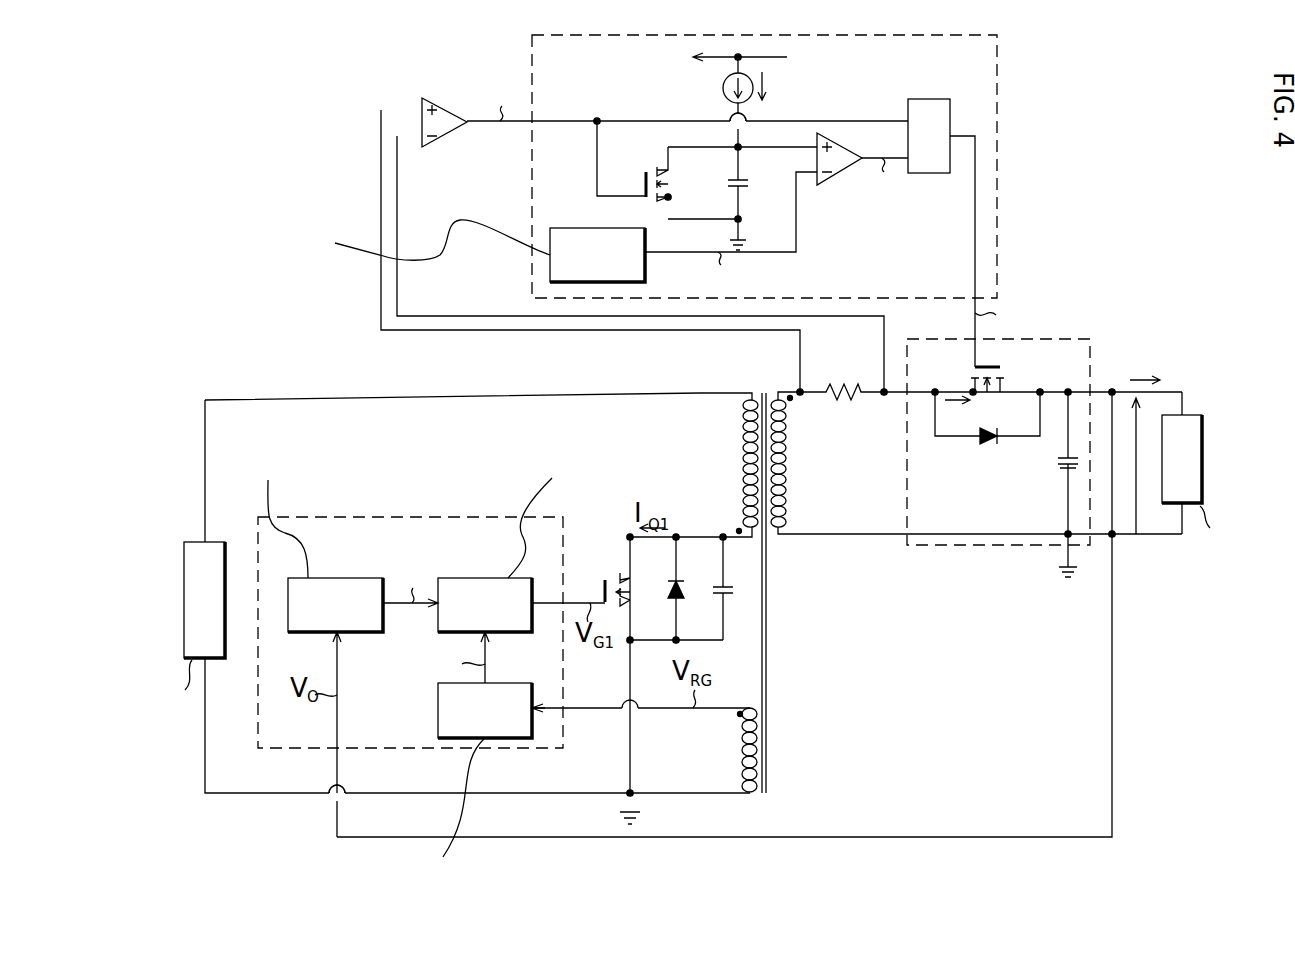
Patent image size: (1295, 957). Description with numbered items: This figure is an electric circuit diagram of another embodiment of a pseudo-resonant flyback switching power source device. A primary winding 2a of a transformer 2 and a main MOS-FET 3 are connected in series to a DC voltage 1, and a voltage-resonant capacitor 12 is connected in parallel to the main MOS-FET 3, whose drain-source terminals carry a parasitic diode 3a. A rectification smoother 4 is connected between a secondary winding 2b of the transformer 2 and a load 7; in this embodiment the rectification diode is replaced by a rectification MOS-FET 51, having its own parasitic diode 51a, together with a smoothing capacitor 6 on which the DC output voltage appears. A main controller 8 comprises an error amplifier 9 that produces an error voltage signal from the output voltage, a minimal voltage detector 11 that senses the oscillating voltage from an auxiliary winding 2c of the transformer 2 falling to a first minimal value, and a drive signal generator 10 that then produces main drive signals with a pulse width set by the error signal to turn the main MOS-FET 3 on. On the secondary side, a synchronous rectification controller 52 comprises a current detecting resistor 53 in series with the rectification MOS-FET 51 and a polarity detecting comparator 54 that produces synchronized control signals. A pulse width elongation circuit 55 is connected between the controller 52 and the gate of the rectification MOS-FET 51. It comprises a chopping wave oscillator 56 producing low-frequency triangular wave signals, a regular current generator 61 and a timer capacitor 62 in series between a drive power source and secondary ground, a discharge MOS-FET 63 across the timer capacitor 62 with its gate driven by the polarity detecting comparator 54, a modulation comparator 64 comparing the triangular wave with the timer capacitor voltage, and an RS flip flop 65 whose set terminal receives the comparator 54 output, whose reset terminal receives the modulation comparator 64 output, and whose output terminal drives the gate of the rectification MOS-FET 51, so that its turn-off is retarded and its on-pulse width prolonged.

The DC voltage 1 is at (196, 540).
The transformer 2 is at (764, 393).
The primary winding 2a is at (743, 464).
The secondary winding 2b is at (787, 465).
The auxiliary winding 2c is at (742, 748).
The main MOS-FET 3 is at (607, 578).
The parasitic diode 3a is at (675, 598).
The rectification smoother 4 is at (1000, 545).
The smoothing capacitor 6 is at (1063, 463).
The load 7 is at (1184, 413).
The main controller 8 is at (415, 507).
The error amplifier 9 is at (336, 578).
The drive signal generator 10 is at (484, 578).
The minimal voltage detector 11 is at (438, 711).
The voltage-resonant capacitor 12 is at (712, 587).
The rectification MOS-FET 51 is at (1006, 368).
The parasitic diode 51a is at (986, 447).
The synchronous rectification controller 52 is at (408, 90).
The current detecting resistor 53 is at (840, 388).
The polarity detecting comparator 54 is at (447, 106).
The pulse width elongation circuit 55 is at (1011, 159).
The chopping wave oscillator 56 is at (597, 228).
The regular current generator 61 is at (723, 90).
The timer capacitor 62 is at (729, 181).
The discharge MOS-FET 63 is at (650, 170).
The modulation comparator 64 is at (840, 180).
The RS flip flop 65 is at (928, 99).